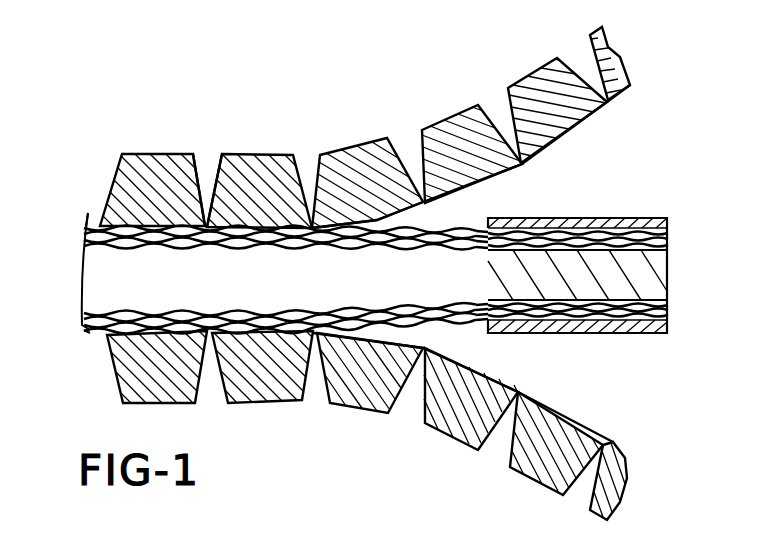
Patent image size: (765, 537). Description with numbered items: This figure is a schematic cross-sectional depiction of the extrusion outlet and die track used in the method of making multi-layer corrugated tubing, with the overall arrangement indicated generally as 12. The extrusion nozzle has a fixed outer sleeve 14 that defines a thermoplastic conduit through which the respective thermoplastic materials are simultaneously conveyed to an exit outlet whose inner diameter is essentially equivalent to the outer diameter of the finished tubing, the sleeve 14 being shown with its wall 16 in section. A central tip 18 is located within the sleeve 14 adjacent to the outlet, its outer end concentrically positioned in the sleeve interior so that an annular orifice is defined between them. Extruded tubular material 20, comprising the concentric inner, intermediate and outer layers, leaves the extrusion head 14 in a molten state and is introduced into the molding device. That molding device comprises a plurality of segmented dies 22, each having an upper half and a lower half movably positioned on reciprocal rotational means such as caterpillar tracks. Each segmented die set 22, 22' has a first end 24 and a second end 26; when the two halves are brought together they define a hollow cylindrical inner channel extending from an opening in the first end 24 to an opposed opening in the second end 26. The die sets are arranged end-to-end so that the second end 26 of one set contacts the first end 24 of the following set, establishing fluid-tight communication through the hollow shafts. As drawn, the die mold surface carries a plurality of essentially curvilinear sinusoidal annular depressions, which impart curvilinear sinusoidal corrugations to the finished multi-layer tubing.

The hose assembly 12 is at (652, 147).
The fixed outer sleeve 14 is at (572, 218).
The tubular member wall 16 is at (657, 283).
The central tip 18 is at (446, 285).
The extruded tubular material 20 is at (430, 223).
The segmented die 22 is at (152, 159).
The segmented die set 22' is at (281, 155).
The first end 24 is at (207, 226).
The second end 26 is at (62, 194).